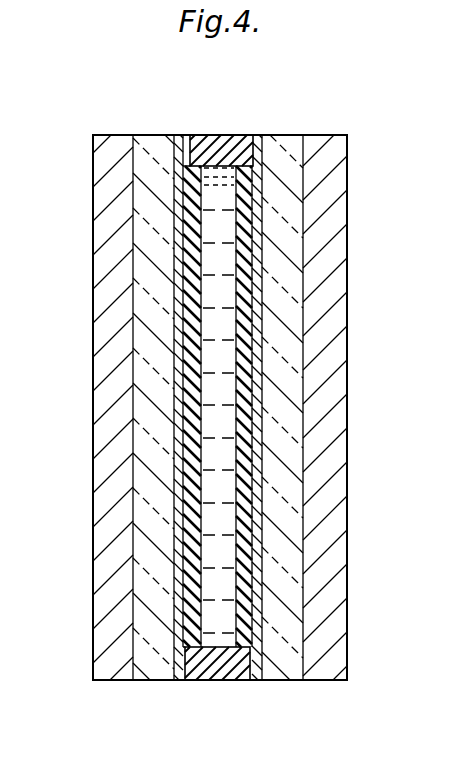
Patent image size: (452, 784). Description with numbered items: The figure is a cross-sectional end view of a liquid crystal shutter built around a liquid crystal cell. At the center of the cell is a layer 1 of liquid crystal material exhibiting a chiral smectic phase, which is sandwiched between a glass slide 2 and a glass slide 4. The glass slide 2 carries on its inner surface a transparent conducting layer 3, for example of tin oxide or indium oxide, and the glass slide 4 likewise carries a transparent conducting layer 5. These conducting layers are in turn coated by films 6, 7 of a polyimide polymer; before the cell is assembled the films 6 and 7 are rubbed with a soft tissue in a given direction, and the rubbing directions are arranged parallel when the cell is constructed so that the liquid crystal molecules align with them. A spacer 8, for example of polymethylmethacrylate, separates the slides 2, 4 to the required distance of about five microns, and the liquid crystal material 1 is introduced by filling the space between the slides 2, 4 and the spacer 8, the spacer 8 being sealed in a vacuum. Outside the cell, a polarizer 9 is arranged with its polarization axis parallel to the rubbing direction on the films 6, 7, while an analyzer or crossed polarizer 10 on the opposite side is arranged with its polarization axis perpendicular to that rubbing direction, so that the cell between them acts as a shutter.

The layer of liquid crystal material 1 is at (231, 180).
The glass slide 2 is at (159, 148).
The transparent conducting layer 3 is at (172, 573).
The glass slide 4 is at (291, 155).
The transparent conducting layer 5 is at (268, 327).
The polyimide polymer film 6 is at (188, 448).
The polyimide polymer film 7 is at (248, 437).
The spacer 8 is at (208, 150).
The polarizer 9 is at (100, 335).
The analyzer (crossed polarizer) 10 is at (331, 145).